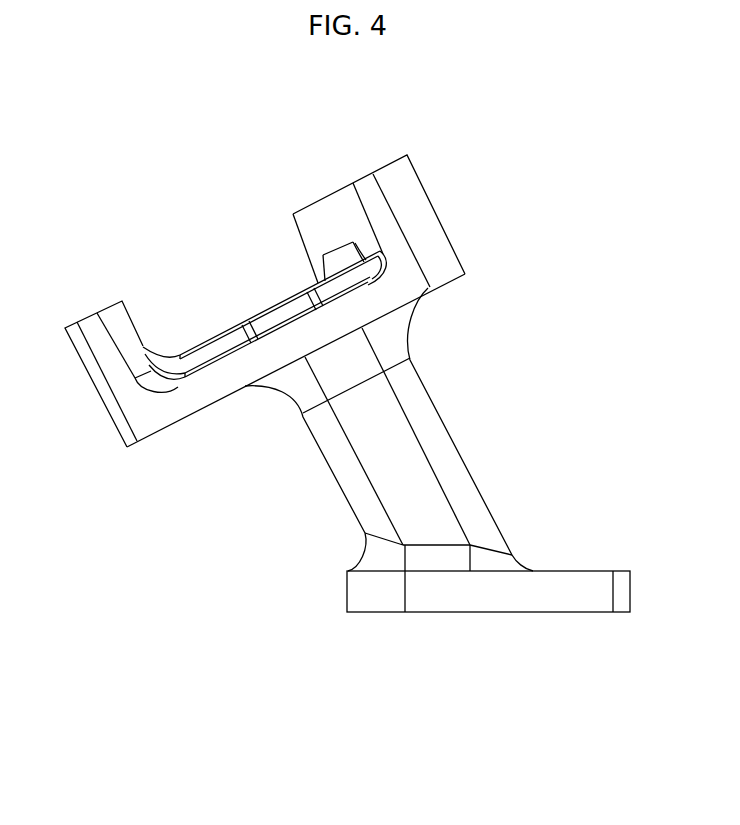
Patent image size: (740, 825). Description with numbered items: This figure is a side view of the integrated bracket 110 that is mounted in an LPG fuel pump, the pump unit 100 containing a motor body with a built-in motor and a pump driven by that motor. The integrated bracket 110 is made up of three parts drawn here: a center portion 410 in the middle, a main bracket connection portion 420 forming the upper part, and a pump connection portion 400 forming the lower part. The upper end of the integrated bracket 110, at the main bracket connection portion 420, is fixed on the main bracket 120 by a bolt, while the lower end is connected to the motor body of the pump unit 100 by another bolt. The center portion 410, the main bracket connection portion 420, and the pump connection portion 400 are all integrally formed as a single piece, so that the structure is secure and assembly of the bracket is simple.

The integrated bracket 110 is at (307, 503).
The main bracket 120 is at (93, 313).
The pump connection portion 400 is at (567, 582).
The center portion 410 is at (453, 448).
The main bracket connection portion 420 is at (433, 233).
The pump unit 100 is at (380, 618).